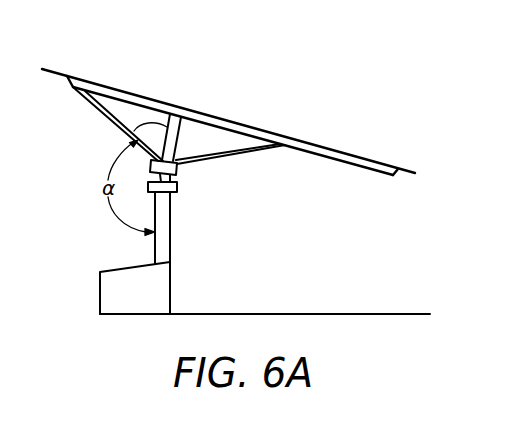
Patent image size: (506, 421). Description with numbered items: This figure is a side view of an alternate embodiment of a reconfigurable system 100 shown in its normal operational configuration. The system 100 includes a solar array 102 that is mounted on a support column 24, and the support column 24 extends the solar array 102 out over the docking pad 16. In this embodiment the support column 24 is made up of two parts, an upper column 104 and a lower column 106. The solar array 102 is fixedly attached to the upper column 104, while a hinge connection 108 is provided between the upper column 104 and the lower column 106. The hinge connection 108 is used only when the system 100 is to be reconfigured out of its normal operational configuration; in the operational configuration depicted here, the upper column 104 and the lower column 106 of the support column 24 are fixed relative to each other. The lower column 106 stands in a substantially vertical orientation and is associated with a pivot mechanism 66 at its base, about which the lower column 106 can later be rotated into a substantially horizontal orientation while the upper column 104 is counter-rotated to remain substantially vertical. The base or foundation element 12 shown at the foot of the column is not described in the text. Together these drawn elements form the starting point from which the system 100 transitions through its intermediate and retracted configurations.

The reconfigurable system 100 is at (386, 88).
The solar array 102 is at (322, 148).
The upper column 104 is at (133, 132).
The lower column 106 is at (171, 250).
The hinge connection 108 is at (177, 188).
The support column 24 is at (155, 247).
The pivot mechanism 66 is at (171, 295).
The base / foundation 12 is at (100, 297).
The docking pad 16 is at (348, 314).